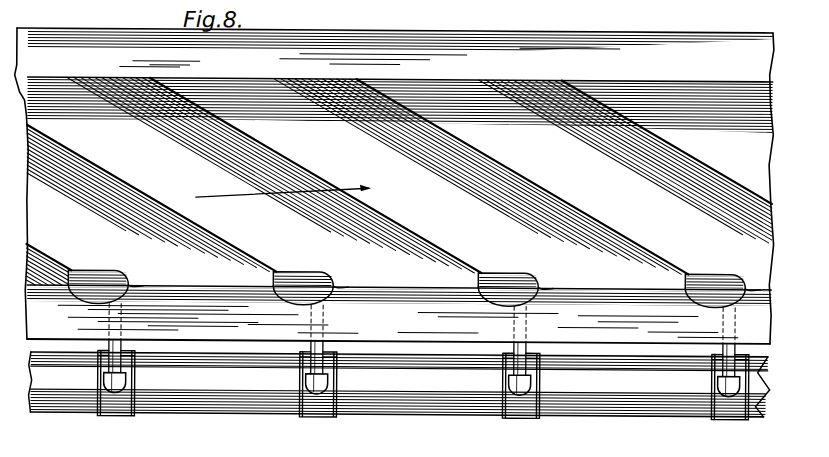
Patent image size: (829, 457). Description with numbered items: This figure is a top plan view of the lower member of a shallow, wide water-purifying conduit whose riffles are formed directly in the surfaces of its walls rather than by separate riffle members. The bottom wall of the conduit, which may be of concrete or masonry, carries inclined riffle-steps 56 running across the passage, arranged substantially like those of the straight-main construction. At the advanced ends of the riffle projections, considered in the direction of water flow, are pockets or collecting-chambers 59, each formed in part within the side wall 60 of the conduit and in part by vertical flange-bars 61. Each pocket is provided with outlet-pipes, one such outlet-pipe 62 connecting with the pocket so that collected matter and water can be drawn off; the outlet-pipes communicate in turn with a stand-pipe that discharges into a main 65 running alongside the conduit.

The riffle-steps 56 is at (521, 173).
The pockets or collecting-chambers 59 is at (539, 294).
The side wall 60 is at (450, 309).
The vertical flange-bars 61 is at (510, 269).
The outlet-pipe 62 is at (533, 369).
The main 65 is at (398, 384).